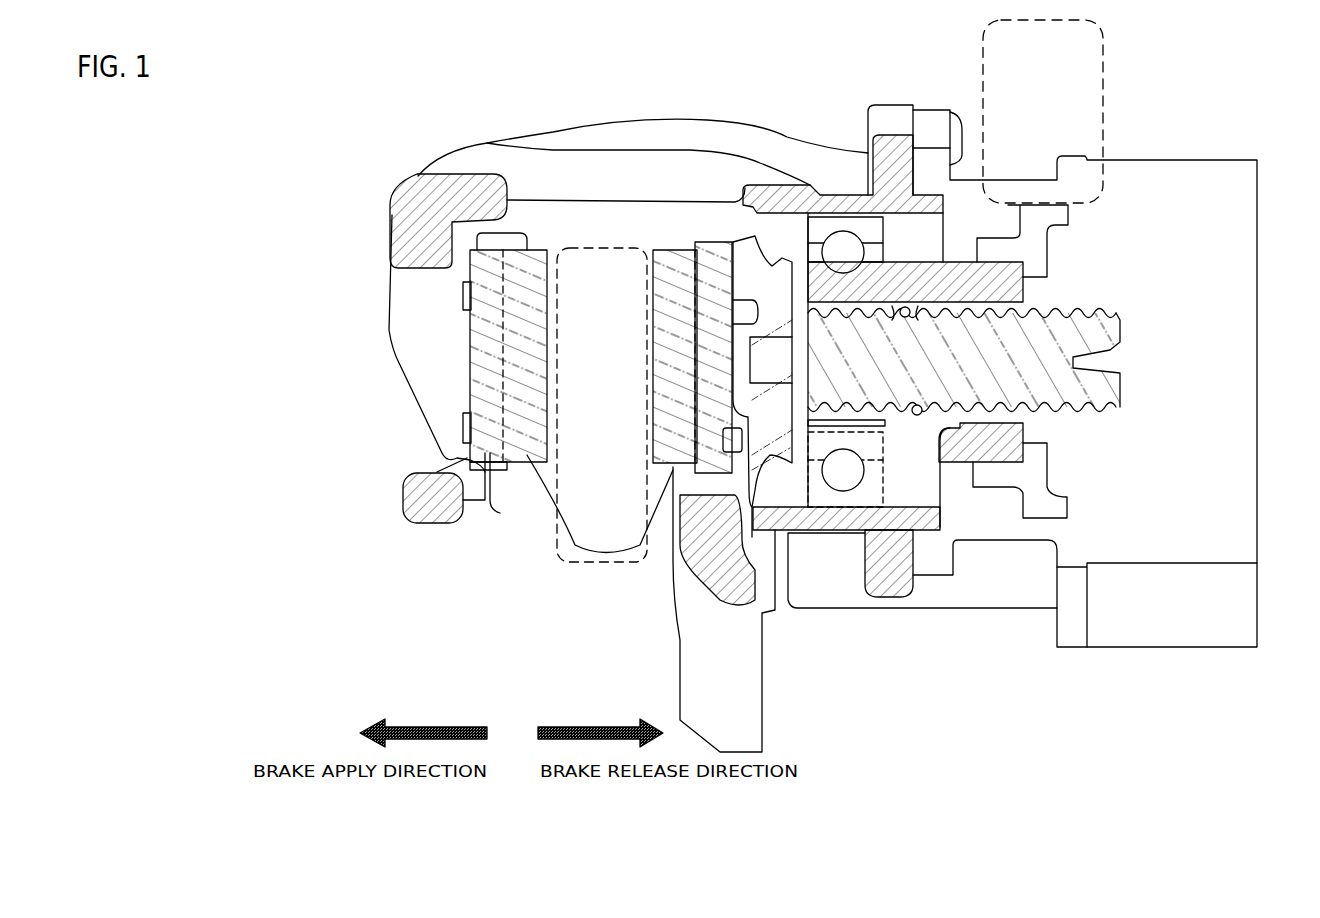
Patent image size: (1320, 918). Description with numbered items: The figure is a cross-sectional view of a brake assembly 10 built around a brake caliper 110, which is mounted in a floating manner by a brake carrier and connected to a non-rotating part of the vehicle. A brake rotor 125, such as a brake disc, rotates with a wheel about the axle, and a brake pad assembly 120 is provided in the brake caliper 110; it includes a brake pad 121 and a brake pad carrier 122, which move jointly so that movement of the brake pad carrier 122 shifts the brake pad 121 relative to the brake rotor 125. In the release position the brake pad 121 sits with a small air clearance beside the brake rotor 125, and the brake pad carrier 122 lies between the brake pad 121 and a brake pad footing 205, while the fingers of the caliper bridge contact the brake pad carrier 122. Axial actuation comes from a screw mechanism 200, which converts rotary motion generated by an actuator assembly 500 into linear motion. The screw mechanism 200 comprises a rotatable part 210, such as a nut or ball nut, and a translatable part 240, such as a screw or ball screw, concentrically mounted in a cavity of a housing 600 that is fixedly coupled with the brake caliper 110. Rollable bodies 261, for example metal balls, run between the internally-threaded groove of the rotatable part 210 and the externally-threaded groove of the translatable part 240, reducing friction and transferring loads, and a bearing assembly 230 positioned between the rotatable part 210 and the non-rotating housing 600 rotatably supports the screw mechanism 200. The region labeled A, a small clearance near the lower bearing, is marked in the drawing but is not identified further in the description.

The brake assembly 10 is at (206, 151).
The brake caliper 110 is at (420, 173).
The brake pad assembly 120 is at (602, 471).
The brake pad 121 is at (675, 470).
The brake pad carrier 122 is at (485, 462).
The brake rotor 125 is at (586, 278).
The screw mechanism 200 is at (948, 428).
The brake pad footing 205 is at (742, 260).
The rotatable part 210 is at (1007, 282).
The bearing assembly 230 is at (804, 246).
The translatable part 240 is at (1112, 388).
The rollable bodies 261 is at (906, 307).
The actuator assembly 500 is at (1103, 77).
The housing 600 is at (1190, 160).
The gap A is at (888, 470).